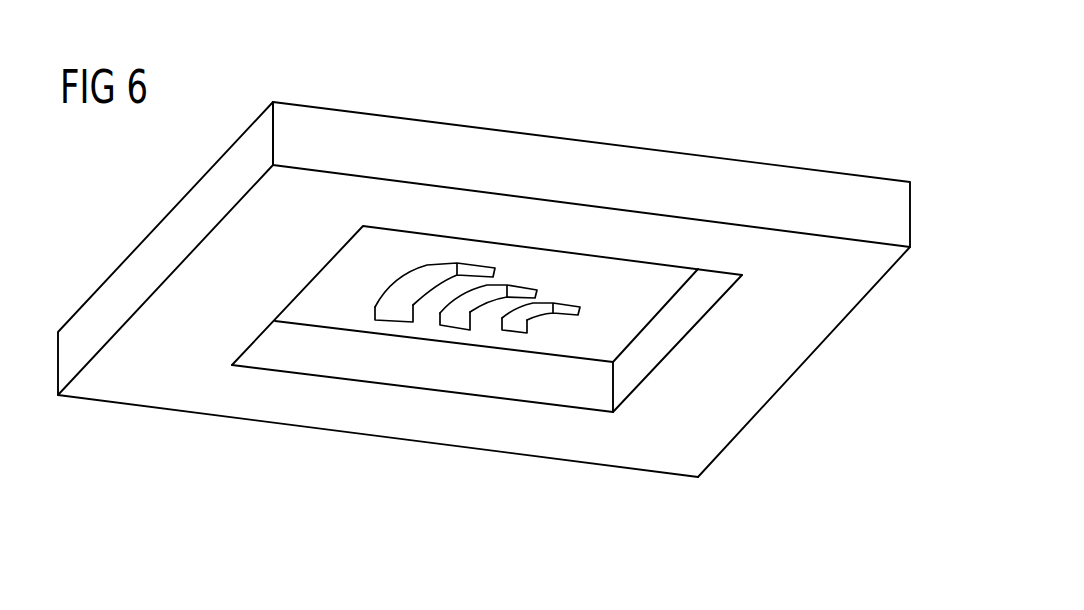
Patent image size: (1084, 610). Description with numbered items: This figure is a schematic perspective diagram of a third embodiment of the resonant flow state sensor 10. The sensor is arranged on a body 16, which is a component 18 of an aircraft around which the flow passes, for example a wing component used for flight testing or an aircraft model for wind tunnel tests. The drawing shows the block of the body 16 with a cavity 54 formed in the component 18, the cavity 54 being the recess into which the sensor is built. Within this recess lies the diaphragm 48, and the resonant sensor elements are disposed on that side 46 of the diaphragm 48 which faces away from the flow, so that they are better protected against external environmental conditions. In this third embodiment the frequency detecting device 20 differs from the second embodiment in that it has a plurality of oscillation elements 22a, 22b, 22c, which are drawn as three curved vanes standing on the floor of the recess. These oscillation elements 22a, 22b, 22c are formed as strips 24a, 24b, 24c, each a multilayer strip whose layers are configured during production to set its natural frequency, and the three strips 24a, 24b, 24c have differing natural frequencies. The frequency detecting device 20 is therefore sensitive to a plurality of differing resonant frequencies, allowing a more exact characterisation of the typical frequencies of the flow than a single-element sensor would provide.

The flow state sensor 10 is at (451, 506).
The body 16 is at (802, 182).
The component 18 is at (864, 311).
The frequency detecting device 20 is at (467, 352).
The oscillation element 22a is at (472, 262).
The oscillation element 22b is at (527, 286).
The oscillation element 22c is at (565, 302).
The strip 24a is at (417, 323).
The strip 24b is at (480, 332).
The strip 24c is at (540, 334).
The side of the diaphragm facing away from the flow 46 is at (619, 309).
The diaphragm 48 is at (343, 268).
The cavity 54 is at (653, 274).